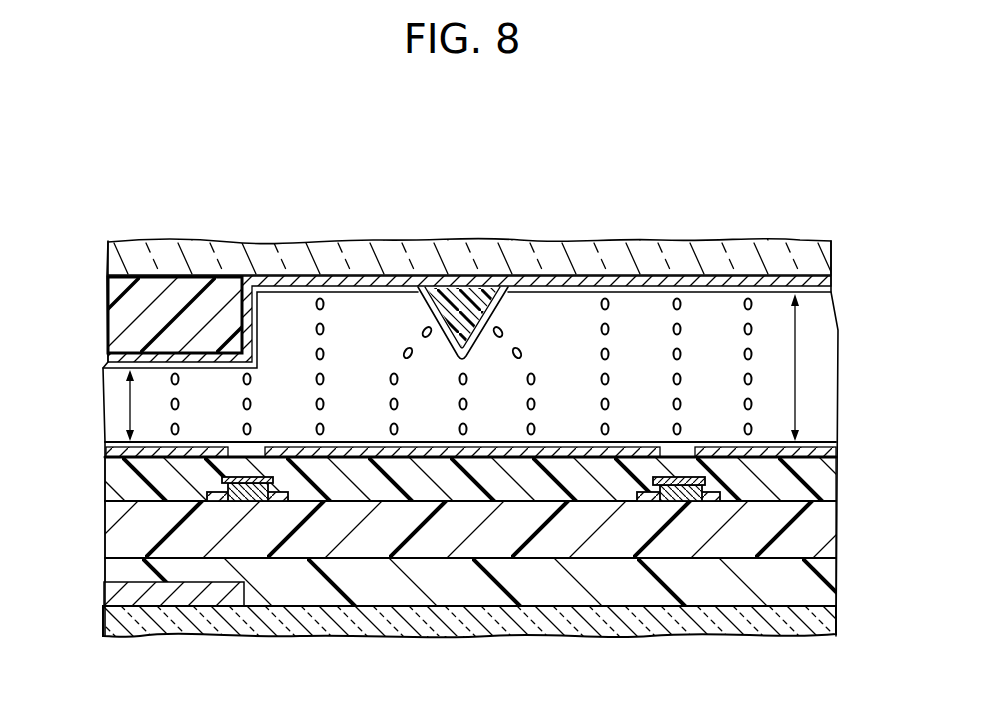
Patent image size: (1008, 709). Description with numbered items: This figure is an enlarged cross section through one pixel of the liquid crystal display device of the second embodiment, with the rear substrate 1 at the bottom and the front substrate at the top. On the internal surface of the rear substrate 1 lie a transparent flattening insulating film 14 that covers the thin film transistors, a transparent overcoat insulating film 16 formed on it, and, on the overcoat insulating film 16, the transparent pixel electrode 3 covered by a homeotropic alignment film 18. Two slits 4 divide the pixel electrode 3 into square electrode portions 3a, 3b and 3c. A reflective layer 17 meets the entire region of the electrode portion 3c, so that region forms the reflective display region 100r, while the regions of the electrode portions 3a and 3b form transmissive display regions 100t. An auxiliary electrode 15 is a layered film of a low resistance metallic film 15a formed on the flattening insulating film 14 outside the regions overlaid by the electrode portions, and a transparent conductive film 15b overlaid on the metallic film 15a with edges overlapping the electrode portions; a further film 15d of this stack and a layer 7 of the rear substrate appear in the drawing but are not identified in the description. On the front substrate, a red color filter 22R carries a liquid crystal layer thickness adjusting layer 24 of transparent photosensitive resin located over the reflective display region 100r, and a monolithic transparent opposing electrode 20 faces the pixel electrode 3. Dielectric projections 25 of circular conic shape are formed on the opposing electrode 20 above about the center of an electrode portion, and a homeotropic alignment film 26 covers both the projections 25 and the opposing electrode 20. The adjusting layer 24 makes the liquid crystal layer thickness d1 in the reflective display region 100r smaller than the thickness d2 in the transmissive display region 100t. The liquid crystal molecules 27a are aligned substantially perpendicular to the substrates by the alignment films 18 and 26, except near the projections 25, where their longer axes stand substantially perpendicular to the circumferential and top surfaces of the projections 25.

The rear substrate 1 is at (115, 622).
The pixel electrode 3 is at (437, 457).
The electrode portion 3a is at (827, 455).
The electrode portion 3b is at (563, 455).
The electrode portion 3c is at (141, 455).
The slit 4 is at (256, 452).
The insulating layer 7 is at (473, 593).
The flattening insulating film 14 is at (818, 540).
The auxiliary electrode 15 is at (481, 581).
The low resistance metallic film 15a is at (275, 502).
The transparent conductive film 15b is at (650, 502).
The drain electrode 15d is at (213, 502).
The overcoat insulating film 16 is at (818, 483).
The reflective layer 17 is at (115, 594).
The homeotropic alignment film 18 is at (572, 442).
The opposing electrode 20 is at (573, 282).
The red color filter 22R is at (112, 263).
The liquid crystal layer thickness adjusting layer 24 is at (122, 322).
The projection 25 is at (461, 308).
The homeotropic alignment film 26 is at (568, 292).
The liquid crystal molecules 27a is at (323, 329).
The reflective display region 100r is at (264, 228).
The transmissive display region 100t is at (848, 170).
The liquid crystal layer thickness in reflective display region d1 is at (128, 406).
The liquid crystal layer thickness in transmissive display region d2 is at (798, 368).